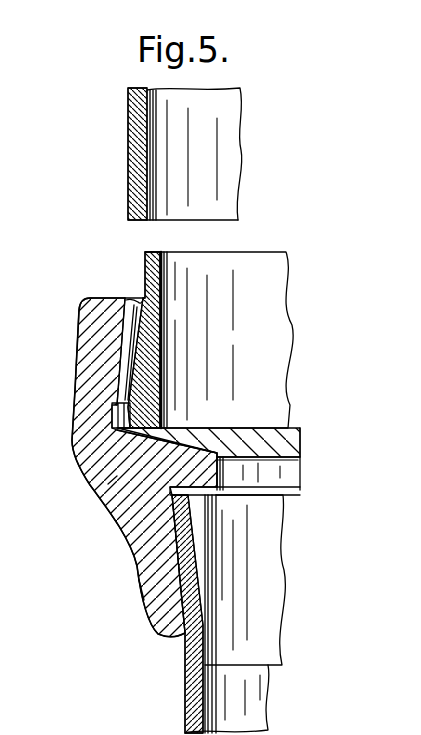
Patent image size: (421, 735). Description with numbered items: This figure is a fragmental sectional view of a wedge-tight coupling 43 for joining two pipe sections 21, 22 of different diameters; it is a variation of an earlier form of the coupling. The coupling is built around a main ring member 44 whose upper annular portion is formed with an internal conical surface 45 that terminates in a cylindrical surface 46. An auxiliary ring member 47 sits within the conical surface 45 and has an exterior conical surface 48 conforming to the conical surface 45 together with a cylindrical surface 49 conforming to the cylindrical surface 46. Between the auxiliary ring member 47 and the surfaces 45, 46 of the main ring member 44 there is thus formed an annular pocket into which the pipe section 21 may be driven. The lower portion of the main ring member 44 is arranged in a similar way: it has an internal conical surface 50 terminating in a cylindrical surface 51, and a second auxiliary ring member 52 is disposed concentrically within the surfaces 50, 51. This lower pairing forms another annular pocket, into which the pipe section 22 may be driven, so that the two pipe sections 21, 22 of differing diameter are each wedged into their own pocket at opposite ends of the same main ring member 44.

The pipe section 21 is at (128, 167).
The pipe section 22 is at (185, 690).
The coupling 43 is at (109, 506).
The main ring member 44 is at (80, 437).
The internal conical surface 45 is at (126, 345).
The cylindrical surface 46 is at (117, 410).
The auxiliary ring member 47 is at (150, 374).
The exterior conical surface 48 is at (140, 300).
The cylindrical surface 49 is at (112, 481).
The internal conical surface 50 is at (142, 592).
The cylindrical surface 51 is at (170, 495).
The auxiliary ring member 52 is at (150, 578).